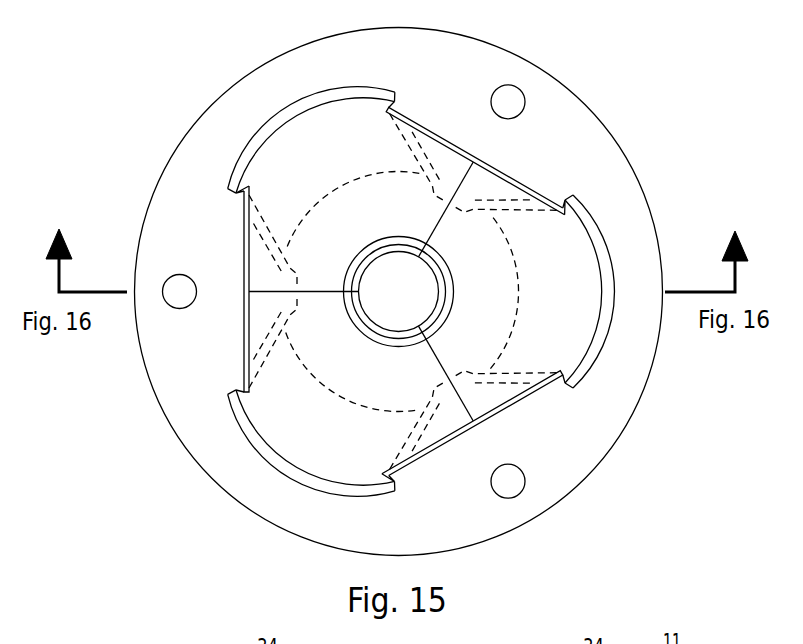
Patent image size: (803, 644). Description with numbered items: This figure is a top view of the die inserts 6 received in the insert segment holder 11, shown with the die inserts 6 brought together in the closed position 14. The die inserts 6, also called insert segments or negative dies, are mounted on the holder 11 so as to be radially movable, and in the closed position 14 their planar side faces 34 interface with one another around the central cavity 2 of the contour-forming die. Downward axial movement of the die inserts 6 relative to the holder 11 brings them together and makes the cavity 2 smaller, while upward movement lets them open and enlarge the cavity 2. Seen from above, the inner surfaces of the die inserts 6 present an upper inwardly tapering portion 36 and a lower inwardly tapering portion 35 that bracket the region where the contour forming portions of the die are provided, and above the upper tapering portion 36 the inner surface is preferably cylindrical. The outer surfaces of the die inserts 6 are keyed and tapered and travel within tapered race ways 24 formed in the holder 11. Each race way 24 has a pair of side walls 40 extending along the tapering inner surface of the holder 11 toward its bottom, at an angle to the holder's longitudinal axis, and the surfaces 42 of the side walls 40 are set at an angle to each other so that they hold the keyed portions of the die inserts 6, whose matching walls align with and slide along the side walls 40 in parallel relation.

The cavity 2 is at (405, 292).
The die inserts 6 is at (432, 137).
The insert segment holder 11 is at (598, 122).
The closed position 14 is at (678, 166).
The tapered race ways 24 is at (326, 97).
The planar side faces 34 is at (432, 224).
The lower inwardly tapering portion 35 is at (365, 270).
The upper inwardly tapering portion 36 is at (398, 347).
The side walls 40 is at (388, 110).
The surfaces of the side walls 42 is at (388, 102).